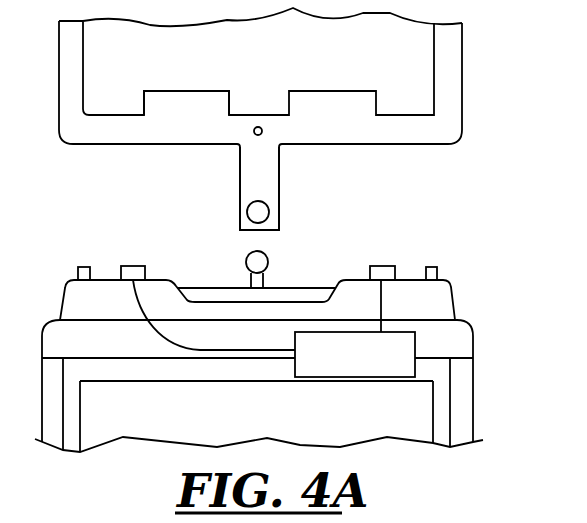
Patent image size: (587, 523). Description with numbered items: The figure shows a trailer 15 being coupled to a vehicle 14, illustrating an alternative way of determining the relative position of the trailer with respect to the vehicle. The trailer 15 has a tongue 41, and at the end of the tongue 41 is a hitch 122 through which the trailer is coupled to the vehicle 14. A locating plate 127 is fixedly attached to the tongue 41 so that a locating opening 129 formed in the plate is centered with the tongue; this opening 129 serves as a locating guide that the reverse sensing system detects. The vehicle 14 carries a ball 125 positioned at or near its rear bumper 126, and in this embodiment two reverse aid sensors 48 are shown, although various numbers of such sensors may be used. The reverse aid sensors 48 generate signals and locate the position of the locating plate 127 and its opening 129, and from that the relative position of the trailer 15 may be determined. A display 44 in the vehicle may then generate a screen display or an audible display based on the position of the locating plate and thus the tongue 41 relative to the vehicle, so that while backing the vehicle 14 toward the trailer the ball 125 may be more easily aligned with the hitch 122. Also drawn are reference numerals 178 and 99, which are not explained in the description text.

The trailer 15 is at (462, 104).
The locating plate 127 is at (193, 108).
The locating opening 129 is at (260, 97).
The aperture 178 is at (262, 131).
The tongue 41 is at (267, 172).
The hitch 122 is at (246, 212).
The ball 125 is at (267, 255).
The rear bumper 126 is at (440, 283).
The vehicle 14 is at (473, 396).
The display 44 is at (355, 381).
The reverse aid sensors 48 is at (130, 266).
The sensors 99 is at (83, 267).